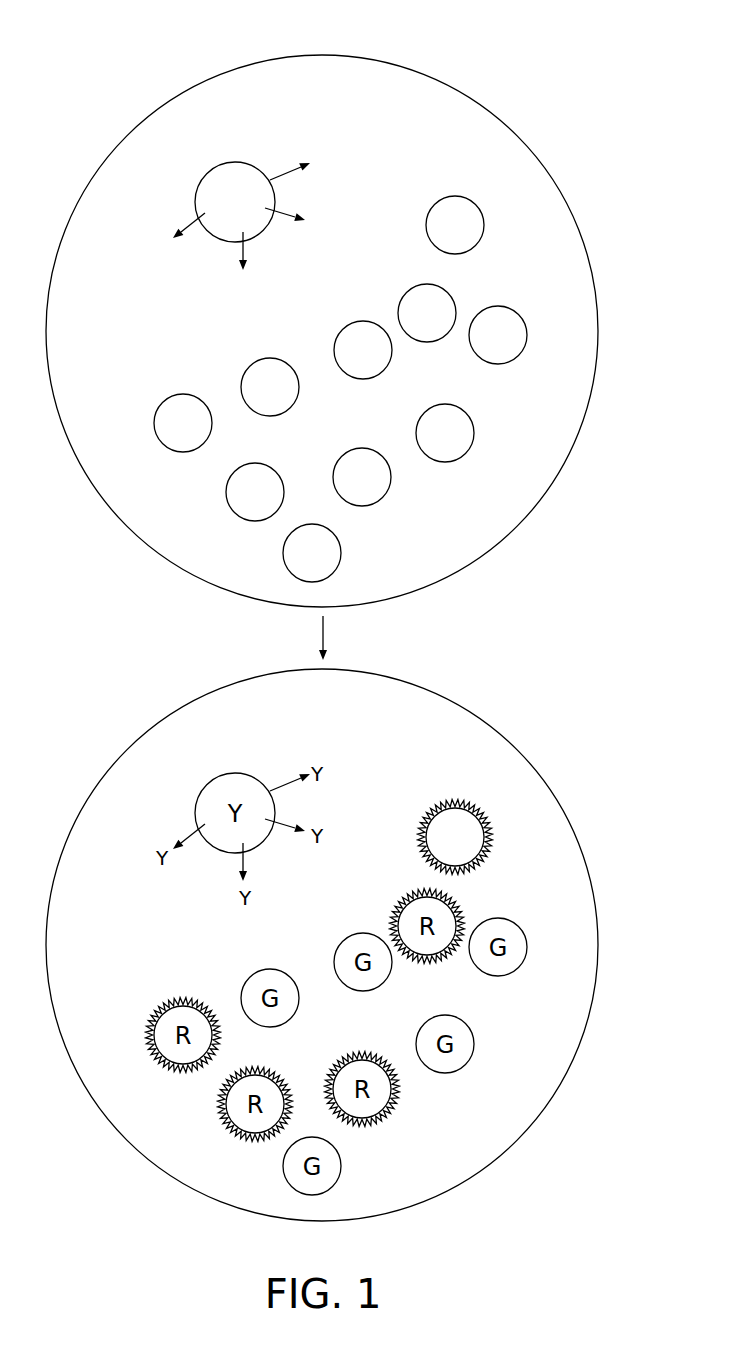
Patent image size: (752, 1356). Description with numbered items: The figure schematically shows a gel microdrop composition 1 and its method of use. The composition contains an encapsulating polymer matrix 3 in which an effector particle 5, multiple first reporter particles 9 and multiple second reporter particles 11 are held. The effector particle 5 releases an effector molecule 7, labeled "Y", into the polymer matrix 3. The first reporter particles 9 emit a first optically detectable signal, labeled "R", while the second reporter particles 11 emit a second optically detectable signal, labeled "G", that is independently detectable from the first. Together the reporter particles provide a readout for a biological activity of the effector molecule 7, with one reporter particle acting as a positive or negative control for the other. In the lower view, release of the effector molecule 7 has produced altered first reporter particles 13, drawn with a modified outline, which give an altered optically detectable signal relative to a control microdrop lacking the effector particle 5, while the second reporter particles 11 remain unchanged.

The gel microdrop composition 1 is at (562, 92).
The encapsulating polymer matrix 3 is at (582, 387).
The effector particle 5 is at (213, 187).
The effector molecule 7 is at (314, 155).
The first reporter particle 9 is at (478, 227).
The second reporter particle 11 is at (522, 335).
The altered first reporter particle 13 is at (478, 838).